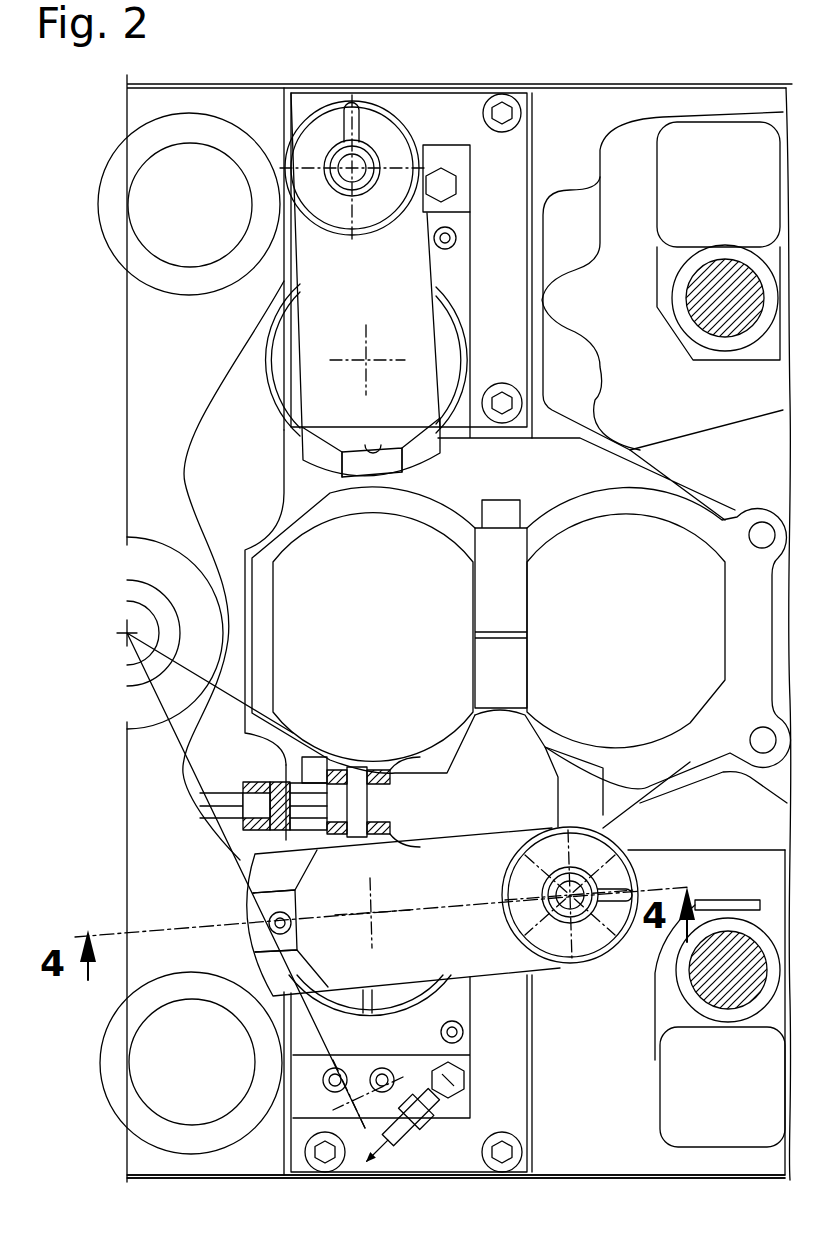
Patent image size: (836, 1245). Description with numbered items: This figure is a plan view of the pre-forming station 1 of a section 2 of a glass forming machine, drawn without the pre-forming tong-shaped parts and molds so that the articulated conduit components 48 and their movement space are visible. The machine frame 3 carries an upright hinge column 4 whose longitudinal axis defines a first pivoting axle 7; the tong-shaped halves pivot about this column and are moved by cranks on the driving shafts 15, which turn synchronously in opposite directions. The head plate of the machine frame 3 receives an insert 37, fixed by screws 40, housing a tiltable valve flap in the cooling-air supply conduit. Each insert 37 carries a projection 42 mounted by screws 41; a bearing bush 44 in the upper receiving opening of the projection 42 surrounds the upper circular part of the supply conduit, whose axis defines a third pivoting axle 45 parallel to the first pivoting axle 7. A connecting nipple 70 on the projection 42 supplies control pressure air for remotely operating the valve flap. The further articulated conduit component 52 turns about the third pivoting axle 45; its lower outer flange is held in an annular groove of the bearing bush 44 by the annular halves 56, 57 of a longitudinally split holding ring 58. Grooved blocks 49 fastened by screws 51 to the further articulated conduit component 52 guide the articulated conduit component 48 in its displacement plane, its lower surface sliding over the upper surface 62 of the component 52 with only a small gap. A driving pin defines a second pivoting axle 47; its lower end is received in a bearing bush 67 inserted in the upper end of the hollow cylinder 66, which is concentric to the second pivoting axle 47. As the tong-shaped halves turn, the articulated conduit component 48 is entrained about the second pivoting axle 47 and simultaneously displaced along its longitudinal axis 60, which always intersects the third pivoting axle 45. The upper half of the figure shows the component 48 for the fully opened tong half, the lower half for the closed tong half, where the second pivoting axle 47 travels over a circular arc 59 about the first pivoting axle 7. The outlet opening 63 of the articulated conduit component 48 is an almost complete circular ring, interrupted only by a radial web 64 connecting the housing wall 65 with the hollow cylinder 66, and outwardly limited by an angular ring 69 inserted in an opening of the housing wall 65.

The pre-forming station 1 is at (243, 1180).
The section 2 is at (122, 487).
The machine frame 3 is at (192, 1180).
The hinge column 4 is at (125, 652).
The first pivoting axle 7 is at (125, 640).
The driving shaft 15 is at (175, 258).
The insert 37 is at (540, 1022).
The screws 40 is at (303, 101).
The screws 41 is at (456, 238).
The projection 42 is at (470, 1100).
The bearing bush 44 is at (455, 310).
The third pivoting axle 45 is at (370, 363).
The second pivoting axle 47 is at (378, 160).
The articulated conduit component 48 is at (281, 283).
The grooved block 49 is at (393, 470).
The screws 51 is at (408, 465).
The further articulated conduit component 52 is at (283, 462).
The annular half 56 is at (283, 392).
The annular half 57 is at (450, 338).
The holding ring 58 is at (366, 994).
The circular arc 59 is at (478, 1008).
The longitudinal axis 60 is at (452, 905).
The upper surface 62 is at (258, 874).
The outlet opening 63 is at (330, 205).
The radial web 64 is at (628, 872).
The housing wall 65 is at (620, 838).
The hollow cylinder 66 is at (580, 940).
The bearing bush 67 is at (352, 210).
The angular ring 69 is at (402, 203).
The connecting nipple 70 is at (453, 180).